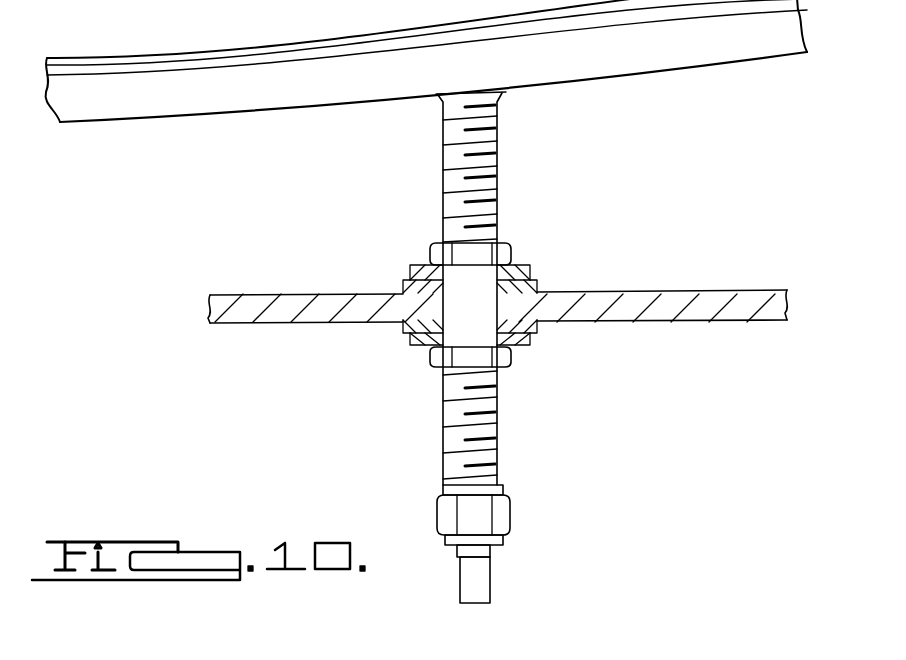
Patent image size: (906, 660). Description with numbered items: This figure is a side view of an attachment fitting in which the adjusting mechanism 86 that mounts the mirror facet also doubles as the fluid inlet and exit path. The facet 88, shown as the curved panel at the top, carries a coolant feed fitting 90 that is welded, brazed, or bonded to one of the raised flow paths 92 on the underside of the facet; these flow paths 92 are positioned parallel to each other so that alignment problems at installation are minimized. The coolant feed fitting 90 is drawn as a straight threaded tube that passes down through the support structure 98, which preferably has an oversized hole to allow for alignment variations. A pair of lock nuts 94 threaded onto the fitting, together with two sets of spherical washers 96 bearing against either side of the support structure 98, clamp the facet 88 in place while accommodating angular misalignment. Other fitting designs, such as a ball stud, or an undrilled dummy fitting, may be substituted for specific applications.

The adjusting mechanism 86 is at (260, 396).
The facet 88 is at (705, 70).
The coolant feed fitting 90 is at (497, 158).
The raised flow path 92 is at (450, 66).
The lock nuts 94 is at (503, 257).
The spherical washers 96 is at (422, 266).
The support structure 98 is at (690, 322).